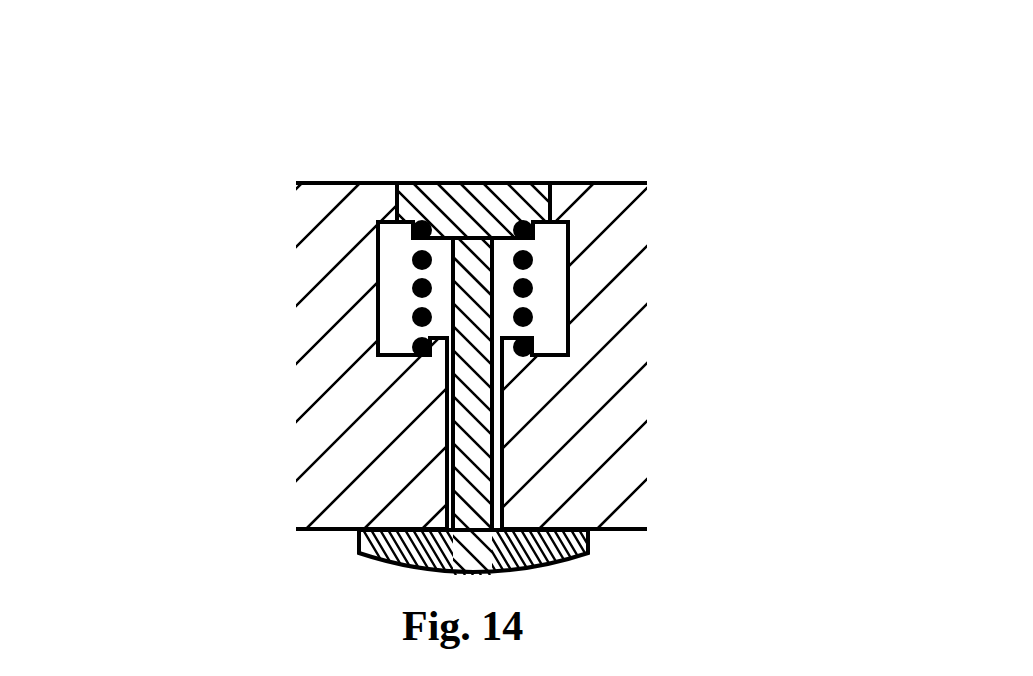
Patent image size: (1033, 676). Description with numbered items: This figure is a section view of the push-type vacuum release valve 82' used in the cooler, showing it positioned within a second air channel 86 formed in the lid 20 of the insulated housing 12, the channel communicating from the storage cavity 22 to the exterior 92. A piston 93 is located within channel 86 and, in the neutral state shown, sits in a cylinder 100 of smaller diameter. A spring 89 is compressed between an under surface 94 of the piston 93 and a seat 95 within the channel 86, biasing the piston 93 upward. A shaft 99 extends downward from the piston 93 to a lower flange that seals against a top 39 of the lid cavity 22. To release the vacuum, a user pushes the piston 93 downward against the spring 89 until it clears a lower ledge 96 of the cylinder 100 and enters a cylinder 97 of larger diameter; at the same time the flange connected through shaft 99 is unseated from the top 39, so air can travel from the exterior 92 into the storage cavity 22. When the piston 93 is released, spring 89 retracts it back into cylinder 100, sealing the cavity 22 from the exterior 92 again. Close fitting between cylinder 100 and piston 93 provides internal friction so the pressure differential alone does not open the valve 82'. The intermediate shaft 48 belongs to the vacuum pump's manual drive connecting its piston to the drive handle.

The vacuum release valve 82' is at (718, 59).
The cylinder 100 is at (524, 183).
The lid 20 is at (622, 183).
The lower ledge 96 is at (744, 258).
The spring 89 is at (530, 258).
The cylinder 97 is at (565, 268).
The second air channel 86 is at (562, 316).
The shaft 99 is at (493, 468).
The insulated housing 12 is at (630, 533).
The storage cavity 22 is at (595, 597).
The exterior 92 is at (360, 157).
The piston 93 is at (438, 183).
The under surface 94 is at (400, 226).
The seat 95 is at (402, 353).
The top 39 is at (314, 529).
The intermediate shaft 48 is at (470, 572).